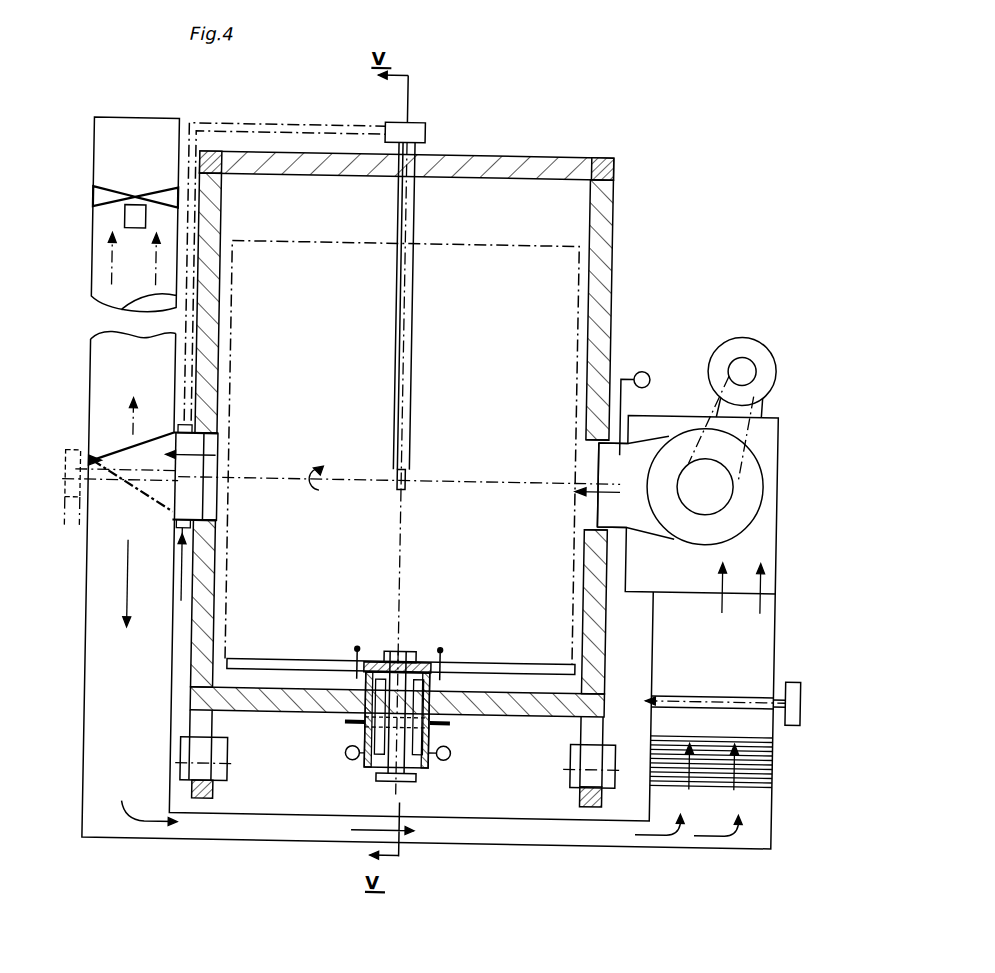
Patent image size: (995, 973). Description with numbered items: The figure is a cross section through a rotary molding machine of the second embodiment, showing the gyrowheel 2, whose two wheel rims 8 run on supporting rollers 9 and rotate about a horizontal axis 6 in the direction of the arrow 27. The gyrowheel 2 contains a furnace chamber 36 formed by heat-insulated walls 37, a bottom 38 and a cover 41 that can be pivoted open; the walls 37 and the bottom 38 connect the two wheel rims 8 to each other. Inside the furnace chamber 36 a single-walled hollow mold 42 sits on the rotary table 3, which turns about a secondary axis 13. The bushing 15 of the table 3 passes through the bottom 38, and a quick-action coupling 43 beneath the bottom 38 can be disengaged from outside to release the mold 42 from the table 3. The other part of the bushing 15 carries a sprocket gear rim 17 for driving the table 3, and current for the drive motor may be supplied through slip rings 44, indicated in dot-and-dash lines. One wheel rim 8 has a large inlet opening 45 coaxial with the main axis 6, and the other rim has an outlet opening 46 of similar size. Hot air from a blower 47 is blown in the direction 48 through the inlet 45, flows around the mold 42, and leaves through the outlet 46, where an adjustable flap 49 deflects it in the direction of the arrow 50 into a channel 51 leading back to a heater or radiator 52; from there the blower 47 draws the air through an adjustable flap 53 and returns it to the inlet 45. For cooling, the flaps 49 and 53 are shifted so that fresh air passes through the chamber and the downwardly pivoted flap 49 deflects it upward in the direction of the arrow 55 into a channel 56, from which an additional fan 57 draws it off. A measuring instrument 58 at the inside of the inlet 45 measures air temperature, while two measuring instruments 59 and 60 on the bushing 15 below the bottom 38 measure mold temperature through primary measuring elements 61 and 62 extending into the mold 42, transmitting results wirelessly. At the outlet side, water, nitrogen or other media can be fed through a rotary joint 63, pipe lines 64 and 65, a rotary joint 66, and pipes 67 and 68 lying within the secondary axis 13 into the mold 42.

The gyrowheel 2 is at (636, 227).
The rotary table 3 is at (264, 664).
The horizontal axis 6 is at (475, 481).
The wheel rims 8 is at (605, 157).
The supporting rollers 9 is at (573, 800).
The secondary axis 13 is at (404, 527).
The bushing 15 is at (434, 746).
The sprocket gear rim 17 is at (436, 726).
The direction of rotation of the gyrowheel 27 is at (311, 465).
The furnace chamber 36 is at (549, 206).
The heat-insulated walls 37 is at (608, 274).
The bottom 38 is at (292, 714).
The cover 41 is at (514, 165).
The hollow mold 42 is at (550, 274).
The quick-action coupling 43 is at (420, 780).
The slip rings 44 is at (74, 501).
The inlet opening 45 is at (578, 514).
The outlet opening 46 is at (208, 504).
The blower 47 is at (748, 459).
The direction of air flow 48 is at (615, 485).
The adjustable flap 49 is at (119, 460).
The direction of deflected air 50 is at (138, 583).
The channel 51 is at (100, 695).
The heater or radiator 52 is at (762, 764).
The adjustable flap 53 is at (749, 698).
The direction of upward air flow 55 is at (145, 417).
The channel 56 is at (104, 367).
The additional fan 57 is at (110, 194).
The measuring instrument 58 is at (645, 368).
The measuring instrument 59 is at (455, 760).
The measuring instrument 60 is at (355, 762).
The primary measuring element 61 is at (446, 650).
The primary measuring element 62 is at (357, 650).
The rotary joint 63 is at (205, 551).
The pipe line 64 is at (226, 126).
The pipe line 65 is at (283, 134).
The rotary joint 66 is at (423, 124).
The pipe 67 is at (414, 332).
The pipe 68 is at (410, 412).